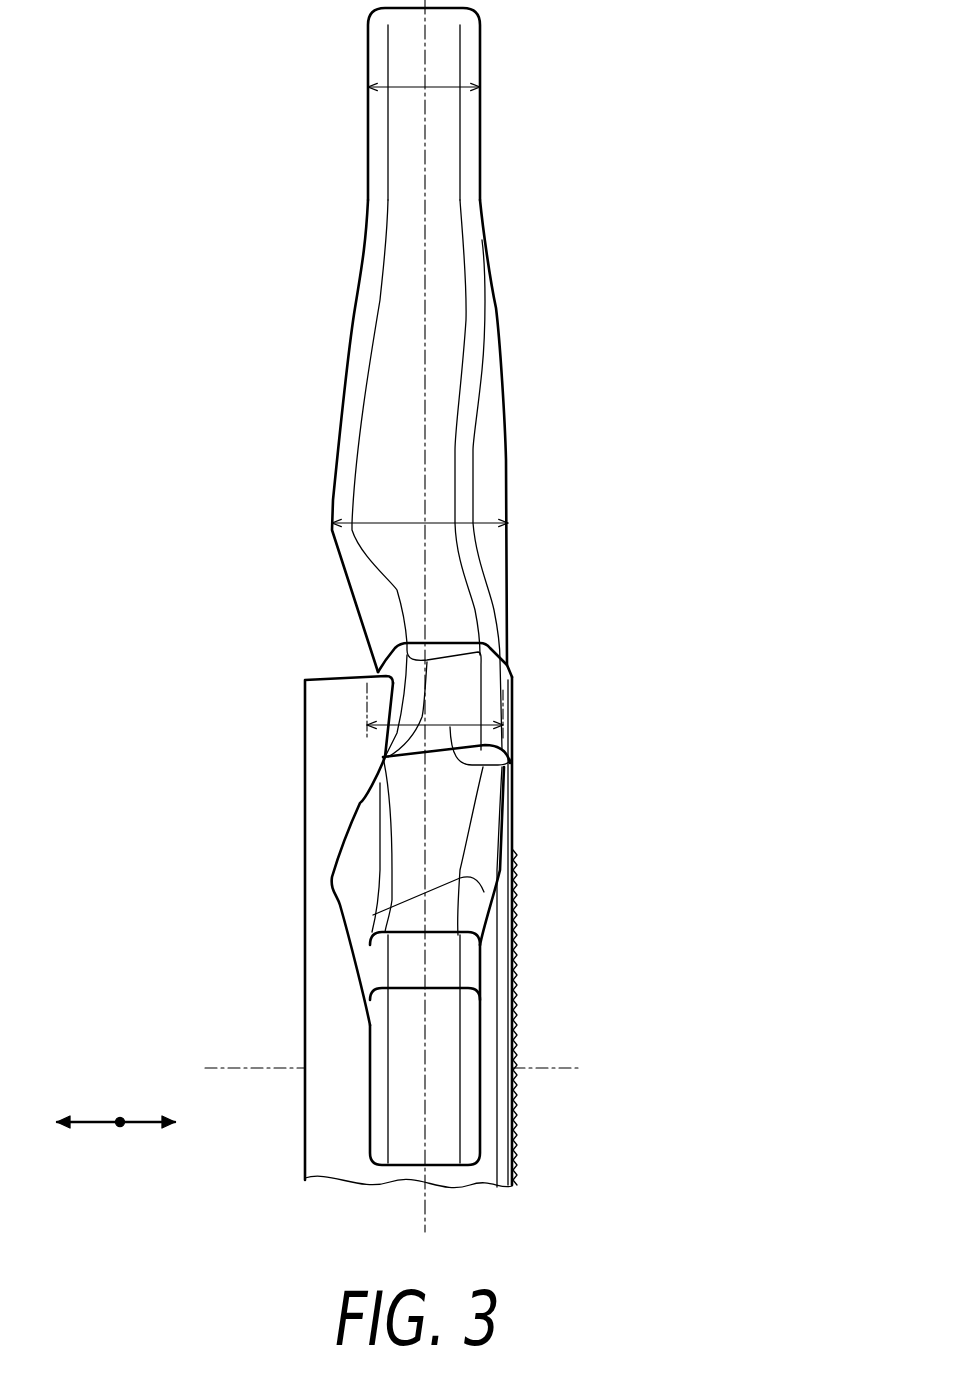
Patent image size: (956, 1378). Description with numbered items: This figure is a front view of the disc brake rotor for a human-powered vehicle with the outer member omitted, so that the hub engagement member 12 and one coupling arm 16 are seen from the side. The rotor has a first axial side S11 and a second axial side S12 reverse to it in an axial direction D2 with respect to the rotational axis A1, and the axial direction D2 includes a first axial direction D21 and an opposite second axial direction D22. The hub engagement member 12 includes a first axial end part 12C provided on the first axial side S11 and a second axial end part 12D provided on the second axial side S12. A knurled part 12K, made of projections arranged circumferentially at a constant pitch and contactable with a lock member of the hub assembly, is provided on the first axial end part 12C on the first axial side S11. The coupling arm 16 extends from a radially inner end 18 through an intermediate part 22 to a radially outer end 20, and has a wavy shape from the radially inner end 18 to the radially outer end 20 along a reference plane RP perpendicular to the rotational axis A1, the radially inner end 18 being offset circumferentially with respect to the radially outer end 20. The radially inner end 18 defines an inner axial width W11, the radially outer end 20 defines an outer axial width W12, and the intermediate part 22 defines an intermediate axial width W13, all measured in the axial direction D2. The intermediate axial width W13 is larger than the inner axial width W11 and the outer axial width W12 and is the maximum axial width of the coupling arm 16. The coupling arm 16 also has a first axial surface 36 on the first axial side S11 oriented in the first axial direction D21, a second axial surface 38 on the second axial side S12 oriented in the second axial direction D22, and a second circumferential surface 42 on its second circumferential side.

The hub engagement member 12 is at (290, 720).
The first axial end part 12C is at (514, 815).
The second axial end part 12D is at (305, 817).
The knurled part 12K is at (520, 1135).
The coupling arm 16 is at (540, 383).
The radially inner end 18 is at (490, 612).
The radially outer end 20 is at (470, 43).
The intermediate part 22 is at (345, 445).
The first axial surface 36 is at (497, 308).
The second axial surface 38 is at (355, 308).
The second circumferential surface 42 is at (387, 391).
The inner axial width W11 is at (488, 766).
The outer axial width W12 is at (410, 87).
The intermediate axial width W13 is at (450, 523).
The first axial side S11 is at (528, 675).
The second axial side S12 is at (293, 663).
The rotational axis A1 is at (258, 1067).
The axial direction D2 is at (177, 1049).
The first axial direction D21 is at (142, 1122).
The second axial direction D22 is at (97, 1122).
The reference plane RP is at (425, 1222).